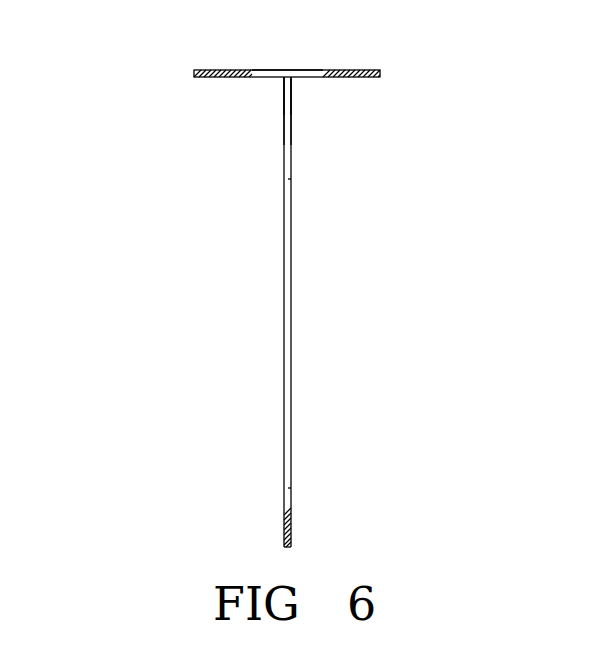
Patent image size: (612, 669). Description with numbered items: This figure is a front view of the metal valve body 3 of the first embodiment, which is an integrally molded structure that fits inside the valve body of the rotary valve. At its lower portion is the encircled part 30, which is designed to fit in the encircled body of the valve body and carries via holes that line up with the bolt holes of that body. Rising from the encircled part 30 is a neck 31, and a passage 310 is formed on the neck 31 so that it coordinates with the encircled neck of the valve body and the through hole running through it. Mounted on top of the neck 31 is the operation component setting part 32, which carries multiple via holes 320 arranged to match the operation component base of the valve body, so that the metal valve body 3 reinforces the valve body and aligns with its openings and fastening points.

The metal valve body 3 is at (272, 275).
The encircled part 30 is at (291, 340).
The neck 31 is at (283, 141).
The passage 310 is at (272, 114).
The operation component setting part 32 is at (360, 77).
The via holes 320 is at (258, 61).